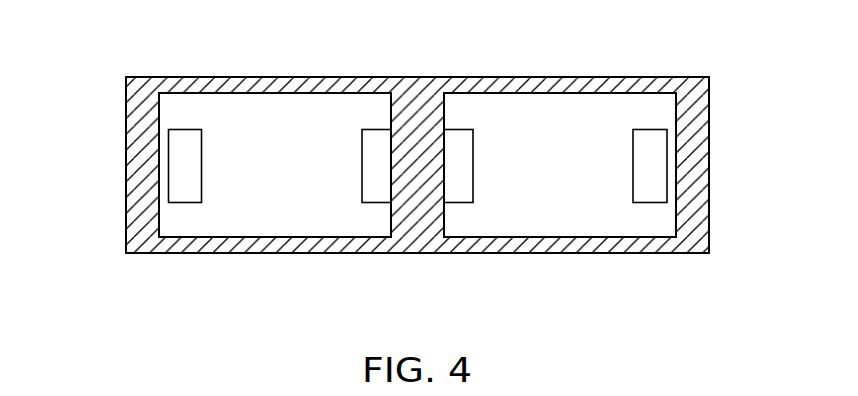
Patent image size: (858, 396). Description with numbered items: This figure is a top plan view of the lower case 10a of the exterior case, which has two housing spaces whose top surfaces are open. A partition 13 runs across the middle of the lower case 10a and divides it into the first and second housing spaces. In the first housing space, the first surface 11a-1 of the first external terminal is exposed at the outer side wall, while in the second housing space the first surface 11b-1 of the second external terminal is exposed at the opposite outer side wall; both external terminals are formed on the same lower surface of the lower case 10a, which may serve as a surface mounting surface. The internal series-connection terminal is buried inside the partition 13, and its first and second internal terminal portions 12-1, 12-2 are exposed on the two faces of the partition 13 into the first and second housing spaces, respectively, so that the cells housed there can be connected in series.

The lower case 10a is at (697, 103).
The partition 13 is at (419, 130).
The first surface of the first external terminal 11a-1 is at (175, 193).
The first internal terminal portion 12-1 is at (377, 183).
The second internal terminal portion 12-2 is at (457, 183).
The first surface of the second external terminal 11b-1 is at (654, 186).